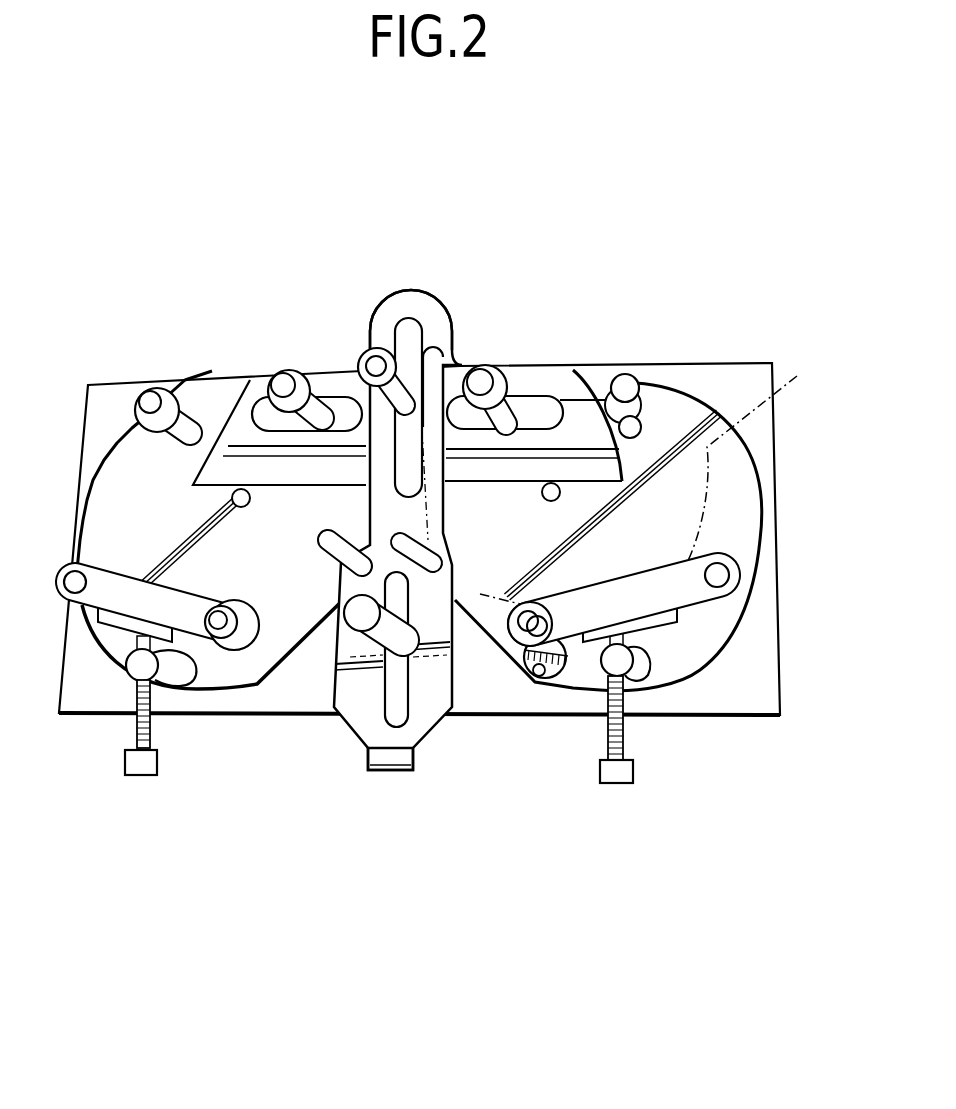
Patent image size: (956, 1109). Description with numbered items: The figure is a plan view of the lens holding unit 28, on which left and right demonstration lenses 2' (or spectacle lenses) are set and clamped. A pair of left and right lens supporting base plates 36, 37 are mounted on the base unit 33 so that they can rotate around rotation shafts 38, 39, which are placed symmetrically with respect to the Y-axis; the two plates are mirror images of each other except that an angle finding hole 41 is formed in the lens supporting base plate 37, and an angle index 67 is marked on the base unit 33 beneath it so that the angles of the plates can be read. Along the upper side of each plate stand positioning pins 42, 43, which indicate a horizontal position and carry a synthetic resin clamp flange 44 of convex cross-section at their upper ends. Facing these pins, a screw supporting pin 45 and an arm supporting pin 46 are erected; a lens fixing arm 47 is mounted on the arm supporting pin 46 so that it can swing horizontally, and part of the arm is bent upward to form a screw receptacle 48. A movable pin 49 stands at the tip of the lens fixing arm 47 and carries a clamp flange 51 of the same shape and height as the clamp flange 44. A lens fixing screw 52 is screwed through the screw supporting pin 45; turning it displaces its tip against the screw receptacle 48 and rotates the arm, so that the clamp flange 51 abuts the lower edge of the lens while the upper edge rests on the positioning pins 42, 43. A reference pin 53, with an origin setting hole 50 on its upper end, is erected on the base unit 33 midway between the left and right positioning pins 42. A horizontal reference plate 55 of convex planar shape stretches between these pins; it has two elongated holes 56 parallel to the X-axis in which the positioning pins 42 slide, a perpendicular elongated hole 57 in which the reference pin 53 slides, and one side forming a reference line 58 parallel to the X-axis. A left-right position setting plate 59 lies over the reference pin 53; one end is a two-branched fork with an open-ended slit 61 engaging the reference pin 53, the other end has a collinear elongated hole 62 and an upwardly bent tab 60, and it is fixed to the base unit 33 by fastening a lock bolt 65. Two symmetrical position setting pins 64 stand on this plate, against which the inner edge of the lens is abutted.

The lens holding unit 28 is at (443, 542).
The base unit 33 is at (735, 383).
The demonstration lenses 2' is at (649, 476).
The lens supporting base plate 36 is at (105, 443).
The lens supporting base plate 37 is at (760, 493).
The rotation shaft 38 is at (235, 503).
The rotation shaft 39 is at (598, 508).
The angle finding hole 41 is at (543, 672).
The positioning pin 42 is at (337, 377).
The positioning pin 43 is at (645, 420).
The clamp flange 44 is at (627, 390).
The screw supporting pin 45 is at (177, 678).
The arm supporting pin 46 is at (722, 560).
The lens fixing arm 47 is at (722, 635).
The screw receptacle 48 is at (706, 615).
The movable pin 49 is at (525, 625).
The origin setting hole 50 is at (378, 363).
The clamp flange 51 is at (518, 642).
The lens fixing screw 52 is at (623, 742).
The reference pin 53 is at (410, 318).
The horizontal reference plate 55 is at (235, 425).
The elongated hole 56 is at (550, 395).
The elongated hole 57 is at (447, 338).
The reference line 58 is at (497, 486).
The left-right position setting plate 59 is at (460, 680).
The tab 60 is at (392, 773).
The slit 61 is at (365, 467).
The elongated hole 62 is at (385, 722).
The position setting pin 64 is at (337, 542).
The lock bolt 65 is at (367, 645).
The angle index 67 is at (573, 662).